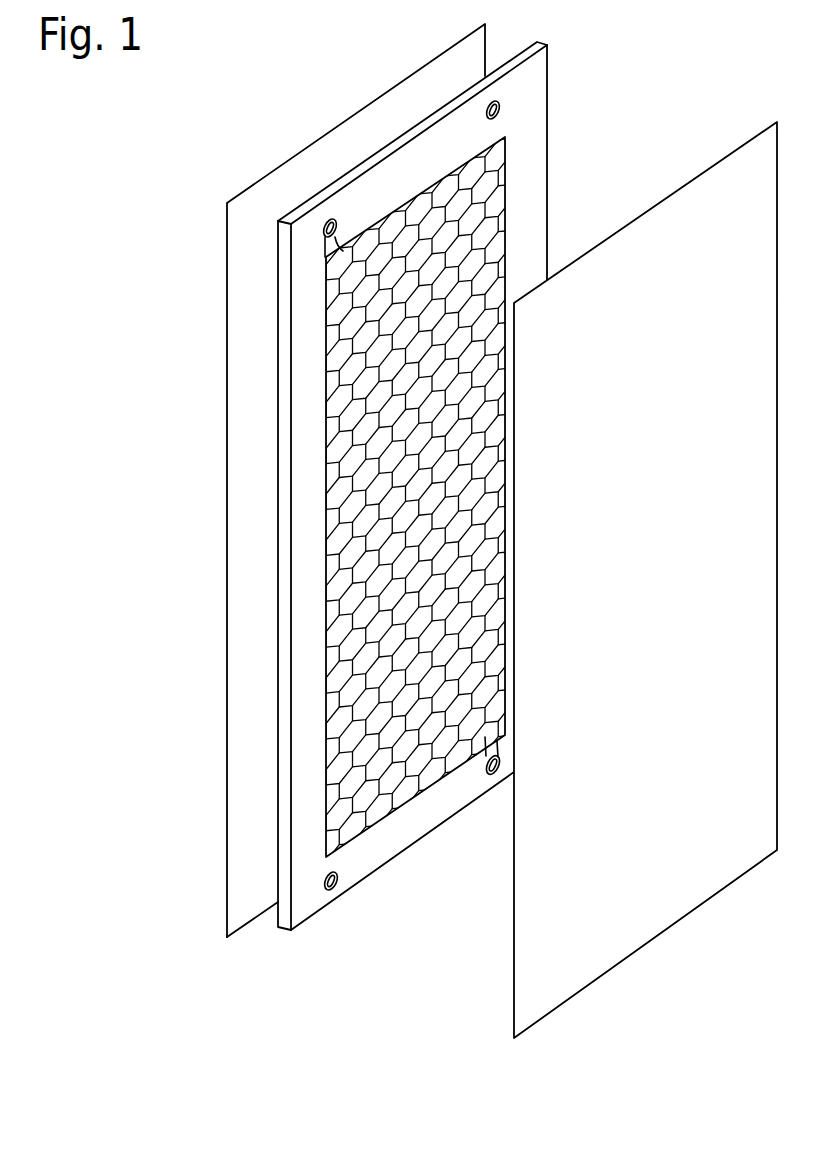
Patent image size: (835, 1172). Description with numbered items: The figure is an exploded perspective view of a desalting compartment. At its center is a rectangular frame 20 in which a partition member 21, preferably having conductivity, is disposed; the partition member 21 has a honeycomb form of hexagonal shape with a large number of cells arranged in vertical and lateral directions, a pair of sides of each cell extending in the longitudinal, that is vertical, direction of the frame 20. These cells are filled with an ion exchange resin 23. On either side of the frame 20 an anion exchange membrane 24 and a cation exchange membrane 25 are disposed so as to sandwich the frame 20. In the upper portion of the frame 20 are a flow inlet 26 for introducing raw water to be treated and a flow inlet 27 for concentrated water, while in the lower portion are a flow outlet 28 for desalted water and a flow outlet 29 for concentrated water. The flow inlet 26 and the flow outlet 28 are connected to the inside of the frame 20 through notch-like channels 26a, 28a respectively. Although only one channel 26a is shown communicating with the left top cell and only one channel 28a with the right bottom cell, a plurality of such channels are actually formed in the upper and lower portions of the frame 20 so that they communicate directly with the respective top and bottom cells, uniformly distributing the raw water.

The frame 20 is at (458, 486).
The partition member 21 is at (378, 554).
The ion exchange resin 23 is at (378, 554).
The anion exchange membrane 24 is at (645, 625).
The cation exchange membrane 25 is at (340, 480).
The flow inlet for raw water 26 is at (242, 216).
The channel 26a is at (380, 202).
The flow inlet for concentrated water 27 is at (553, 74).
The flow outlet for desalted water 28 is at (488, 843).
The channel 28a is at (459, 831).
The flow outlet for concentrated water 29 is at (328, 944).